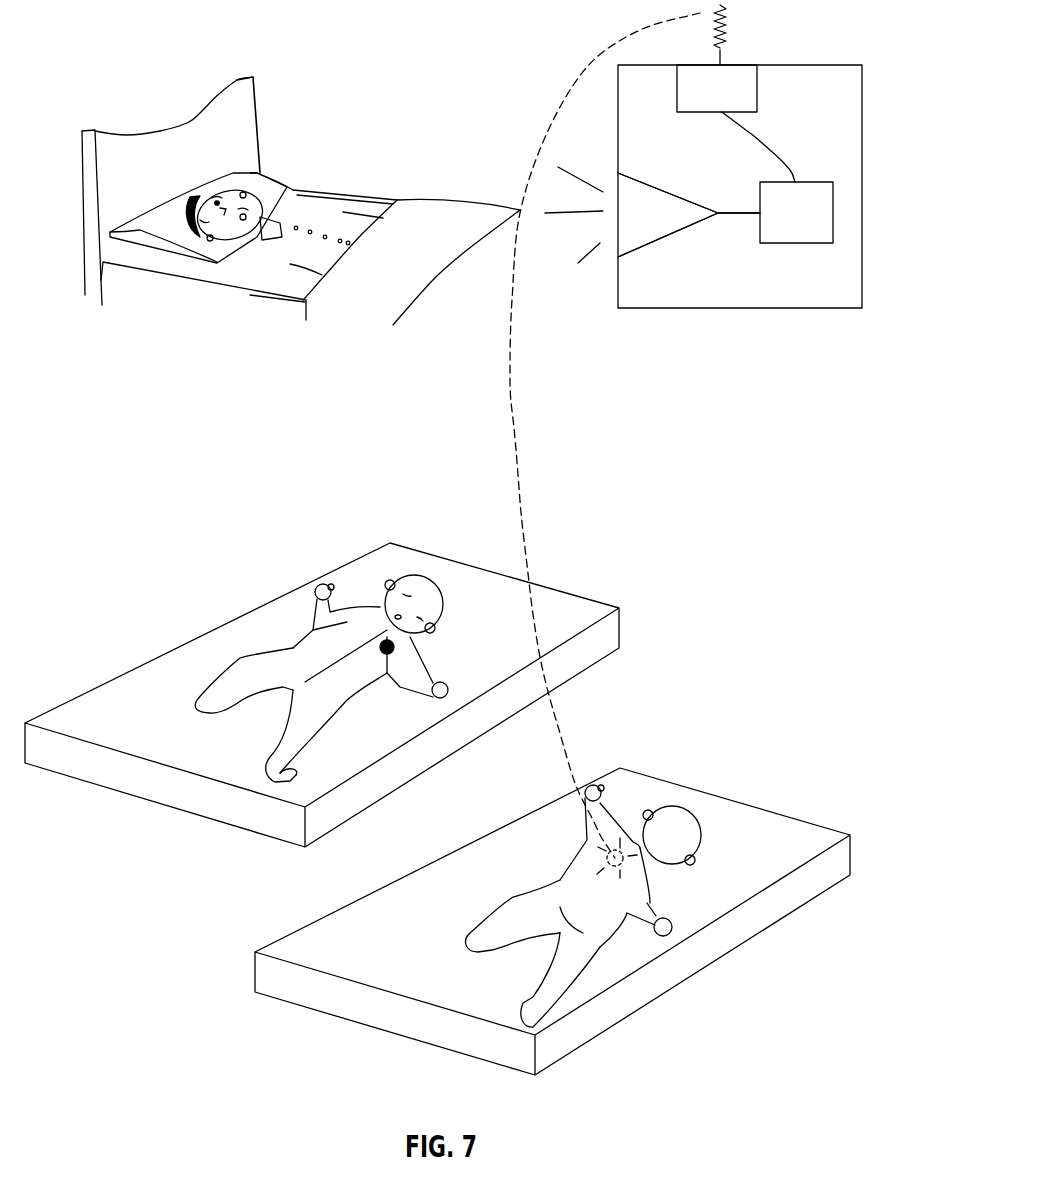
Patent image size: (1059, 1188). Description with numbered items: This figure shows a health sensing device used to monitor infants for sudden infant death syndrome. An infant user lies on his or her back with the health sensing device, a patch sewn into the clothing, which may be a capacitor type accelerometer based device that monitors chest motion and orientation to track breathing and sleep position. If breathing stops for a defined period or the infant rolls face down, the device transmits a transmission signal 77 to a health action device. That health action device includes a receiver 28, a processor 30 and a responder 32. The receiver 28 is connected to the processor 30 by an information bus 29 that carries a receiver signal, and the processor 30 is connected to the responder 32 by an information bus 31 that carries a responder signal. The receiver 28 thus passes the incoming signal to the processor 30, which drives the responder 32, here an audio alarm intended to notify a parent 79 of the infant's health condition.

The receiver 28 is at (757, 83).
The information bus 29 is at (770, 150).
The processor 30 is at (833, 218).
The information bus 31 is at (740, 217).
The responder 32 is at (678, 238).
The transmission signal 77 is at (506, 430).
The parent 79 is at (370, 202).